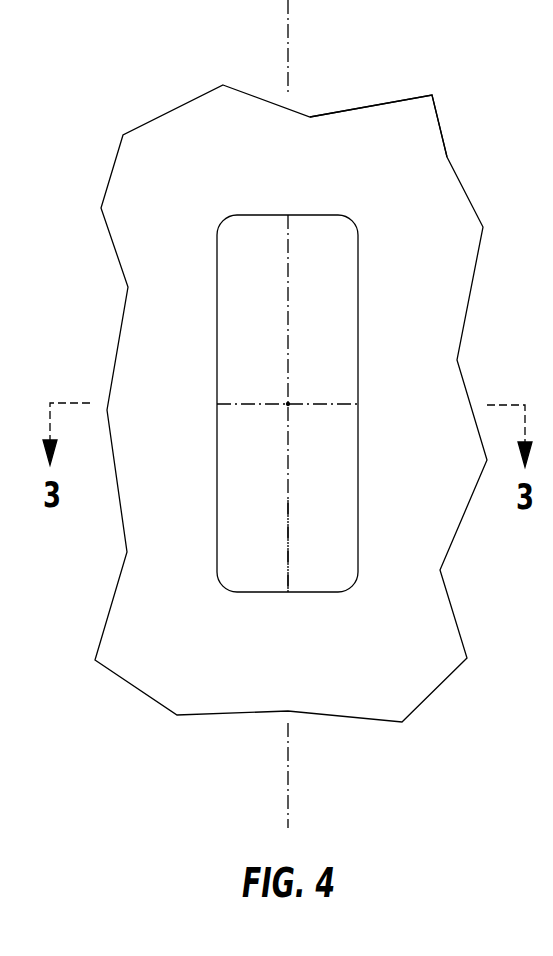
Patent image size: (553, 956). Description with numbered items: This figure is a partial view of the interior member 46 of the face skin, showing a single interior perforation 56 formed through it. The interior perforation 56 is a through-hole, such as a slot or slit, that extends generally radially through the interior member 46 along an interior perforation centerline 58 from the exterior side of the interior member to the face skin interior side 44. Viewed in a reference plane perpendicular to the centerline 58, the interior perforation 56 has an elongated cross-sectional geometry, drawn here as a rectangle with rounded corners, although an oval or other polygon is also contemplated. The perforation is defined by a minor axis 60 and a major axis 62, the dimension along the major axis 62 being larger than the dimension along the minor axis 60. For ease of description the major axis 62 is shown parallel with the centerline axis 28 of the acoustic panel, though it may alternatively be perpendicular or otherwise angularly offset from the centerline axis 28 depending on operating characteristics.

The centerline axis 28 is at (289, 740).
The face skin interior side 44 is at (134, 378).
The interior member 46 is at (450, 95).
The interior perforation 56 is at (301, 313).
The interior perforation centerline 58 is at (288, 405).
The minor axis 60 is at (312, 382).
The major axis 62 is at (289, 571).